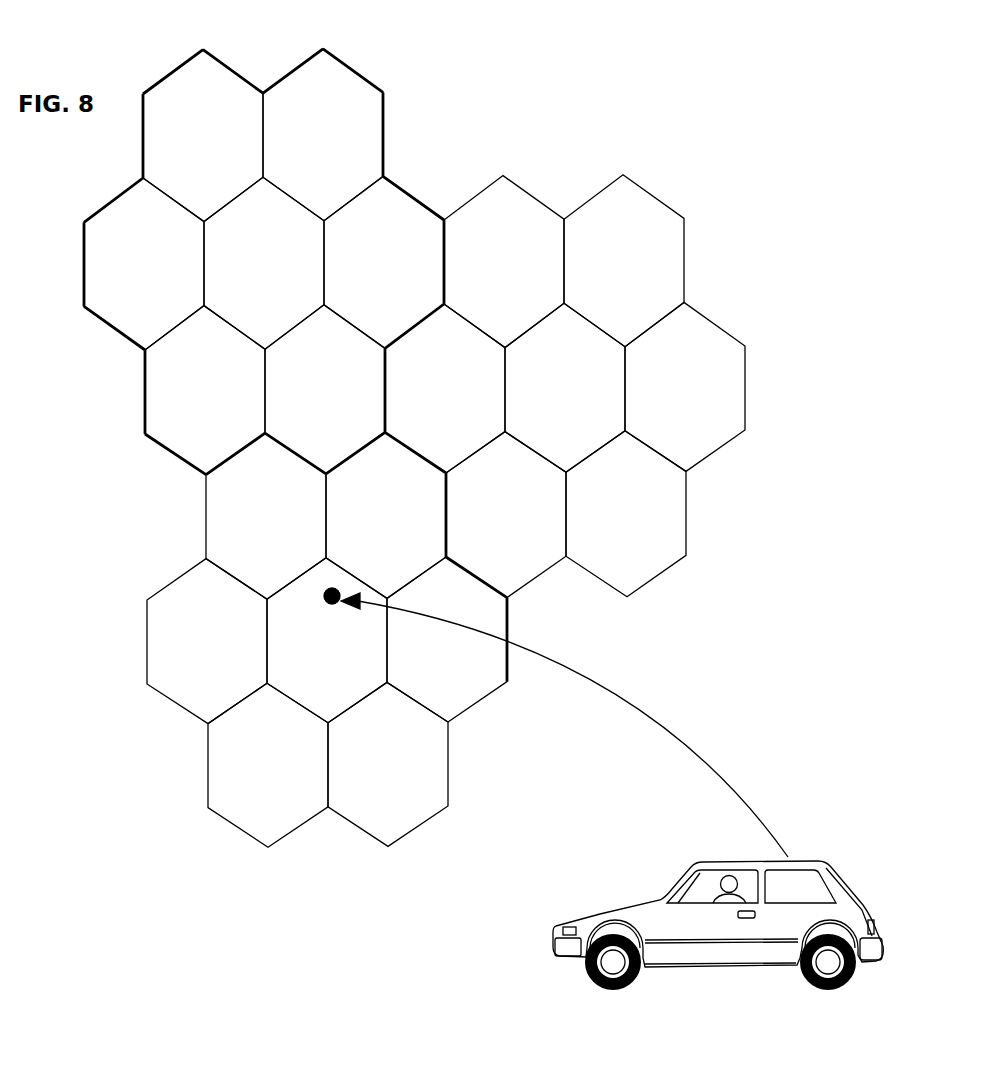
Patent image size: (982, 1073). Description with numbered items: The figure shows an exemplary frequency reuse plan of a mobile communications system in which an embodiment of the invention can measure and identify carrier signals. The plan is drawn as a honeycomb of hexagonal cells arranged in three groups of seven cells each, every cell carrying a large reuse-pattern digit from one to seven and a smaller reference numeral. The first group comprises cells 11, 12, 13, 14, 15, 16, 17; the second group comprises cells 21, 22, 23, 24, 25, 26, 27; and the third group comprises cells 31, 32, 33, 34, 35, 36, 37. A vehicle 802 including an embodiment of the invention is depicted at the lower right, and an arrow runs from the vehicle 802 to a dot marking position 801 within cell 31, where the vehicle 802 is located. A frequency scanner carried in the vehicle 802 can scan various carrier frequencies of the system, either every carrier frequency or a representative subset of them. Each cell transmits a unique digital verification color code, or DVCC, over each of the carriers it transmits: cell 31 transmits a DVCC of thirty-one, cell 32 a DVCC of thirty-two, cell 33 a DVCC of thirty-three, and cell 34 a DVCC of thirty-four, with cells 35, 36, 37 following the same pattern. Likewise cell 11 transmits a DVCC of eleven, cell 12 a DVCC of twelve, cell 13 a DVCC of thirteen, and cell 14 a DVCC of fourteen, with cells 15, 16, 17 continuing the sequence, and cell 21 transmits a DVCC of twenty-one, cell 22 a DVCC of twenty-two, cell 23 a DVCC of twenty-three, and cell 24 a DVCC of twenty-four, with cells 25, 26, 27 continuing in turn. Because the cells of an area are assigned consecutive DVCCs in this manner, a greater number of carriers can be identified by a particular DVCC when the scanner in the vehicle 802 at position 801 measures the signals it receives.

The cell 11 is at (254, 340).
The cell 12 is at (194, 208).
The cell 13 is at (312, 208).
The cell 14 is at (369, 339).
The cell 15 is at (290, 438).
The cell 16 is at (175, 438).
The cell 17 is at (134, 340).
The cell 21 is at (554, 466).
The cell 22 is at (491, 335).
The cell 23 is at (611, 335).
The cell 24 is at (675, 466).
The cell 25 is at (616, 585).
The cell 26 is at (495, 585).
The cell 27 is at (434, 466).
The cell 31 is at (318, 712).
The cell 32 is at (280, 568).
The cell 33 is at (350, 568).
The cell 34 is at (437, 712).
The cell 35 is at (378, 817).
The cell 36 is at (259, 817).
The cell 37 is at (198, 712).
The position 801 is at (326, 599).
The vehicle 802 is at (868, 903).